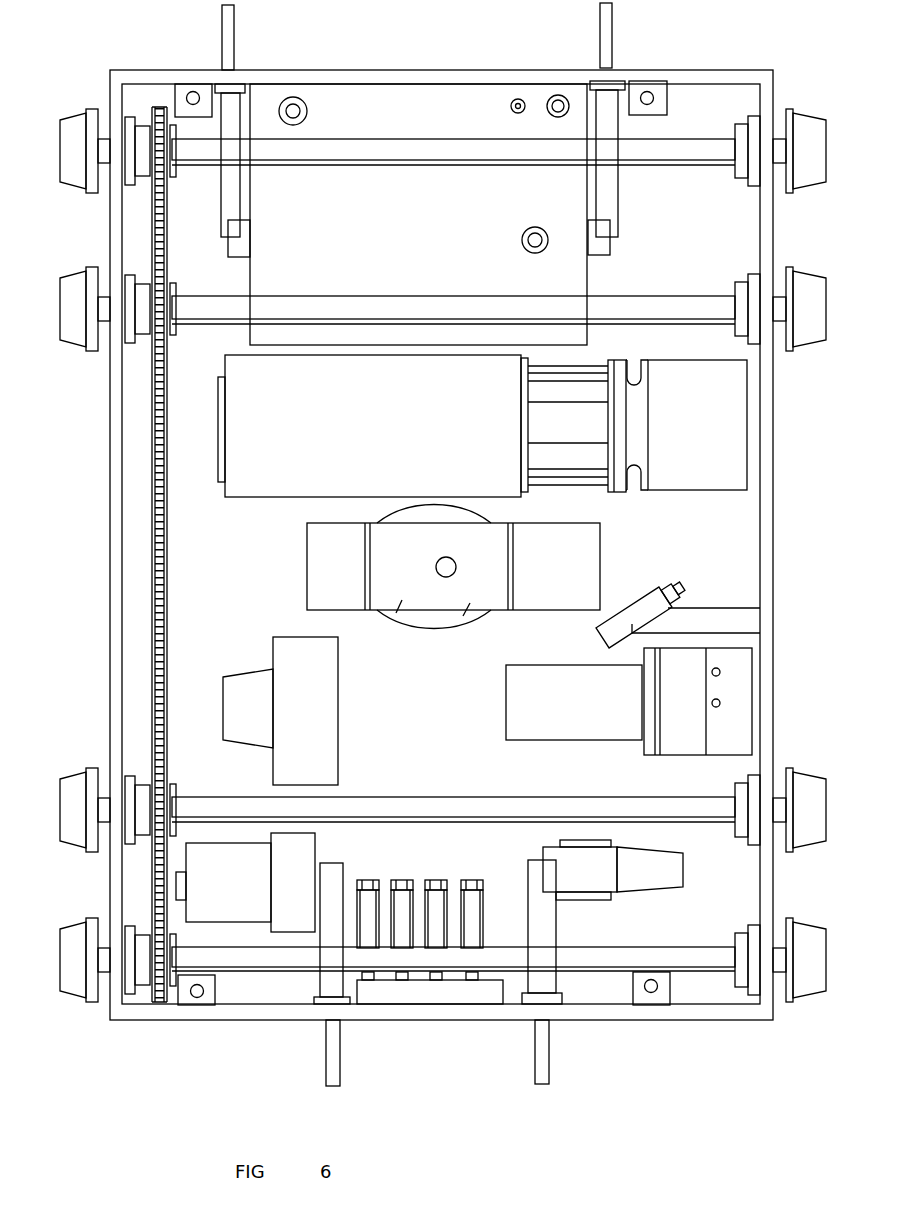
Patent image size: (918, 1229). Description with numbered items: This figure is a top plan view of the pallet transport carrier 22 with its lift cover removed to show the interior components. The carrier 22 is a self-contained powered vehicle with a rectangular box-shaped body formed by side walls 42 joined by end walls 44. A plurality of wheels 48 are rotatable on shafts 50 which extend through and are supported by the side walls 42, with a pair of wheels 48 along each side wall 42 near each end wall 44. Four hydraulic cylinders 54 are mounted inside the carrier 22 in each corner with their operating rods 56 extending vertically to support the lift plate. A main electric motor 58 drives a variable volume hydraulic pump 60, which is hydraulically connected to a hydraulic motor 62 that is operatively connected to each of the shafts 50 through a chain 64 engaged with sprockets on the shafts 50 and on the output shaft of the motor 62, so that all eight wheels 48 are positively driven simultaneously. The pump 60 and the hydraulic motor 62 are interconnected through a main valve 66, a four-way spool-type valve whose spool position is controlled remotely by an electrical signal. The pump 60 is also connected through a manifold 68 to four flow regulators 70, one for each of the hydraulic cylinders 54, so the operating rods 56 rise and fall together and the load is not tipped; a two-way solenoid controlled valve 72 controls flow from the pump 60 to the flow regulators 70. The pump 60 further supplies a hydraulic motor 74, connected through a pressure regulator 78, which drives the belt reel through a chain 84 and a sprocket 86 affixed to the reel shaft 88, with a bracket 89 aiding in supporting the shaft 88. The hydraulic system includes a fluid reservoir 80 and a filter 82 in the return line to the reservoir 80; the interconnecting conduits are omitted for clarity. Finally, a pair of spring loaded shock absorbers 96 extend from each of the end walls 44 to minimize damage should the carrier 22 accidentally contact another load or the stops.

The pallet transport carrier 22 is at (507, 42).
The side walls 42 is at (113, 546).
The end walls 44 is at (405, 70).
The wheels 48 is at (73, 186).
The shafts 50 is at (673, 160).
The hydraulic cylinders 54 is at (204, 86).
The operating rods 56 is at (190, 92).
The main electric motor 58 is at (348, 438).
The variable volume hydraulic pump 60 is at (678, 436).
The hydraulic motor 62 is at (216, 887).
The chain 64 is at (168, 228).
The main valve 66 is at (291, 715).
The manifold 68 is at (411, 1000).
The flow regulators 70 is at (472, 879).
The two-way solenoid controlled valve 72 is at (569, 874).
The hydraulic motor 74 is at (321, 578).
The pressure regulator 78 is at (678, 612).
The fluid reservoir 80 is at (391, 239).
The filter 82 is at (561, 712).
The chain 84 is at (396, 613).
The sprocket 86 is at (463, 616).
The shaft 88 is at (457, 573).
The bracket 89 is at (491, 527).
The shock absorbers 96 is at (235, 28).